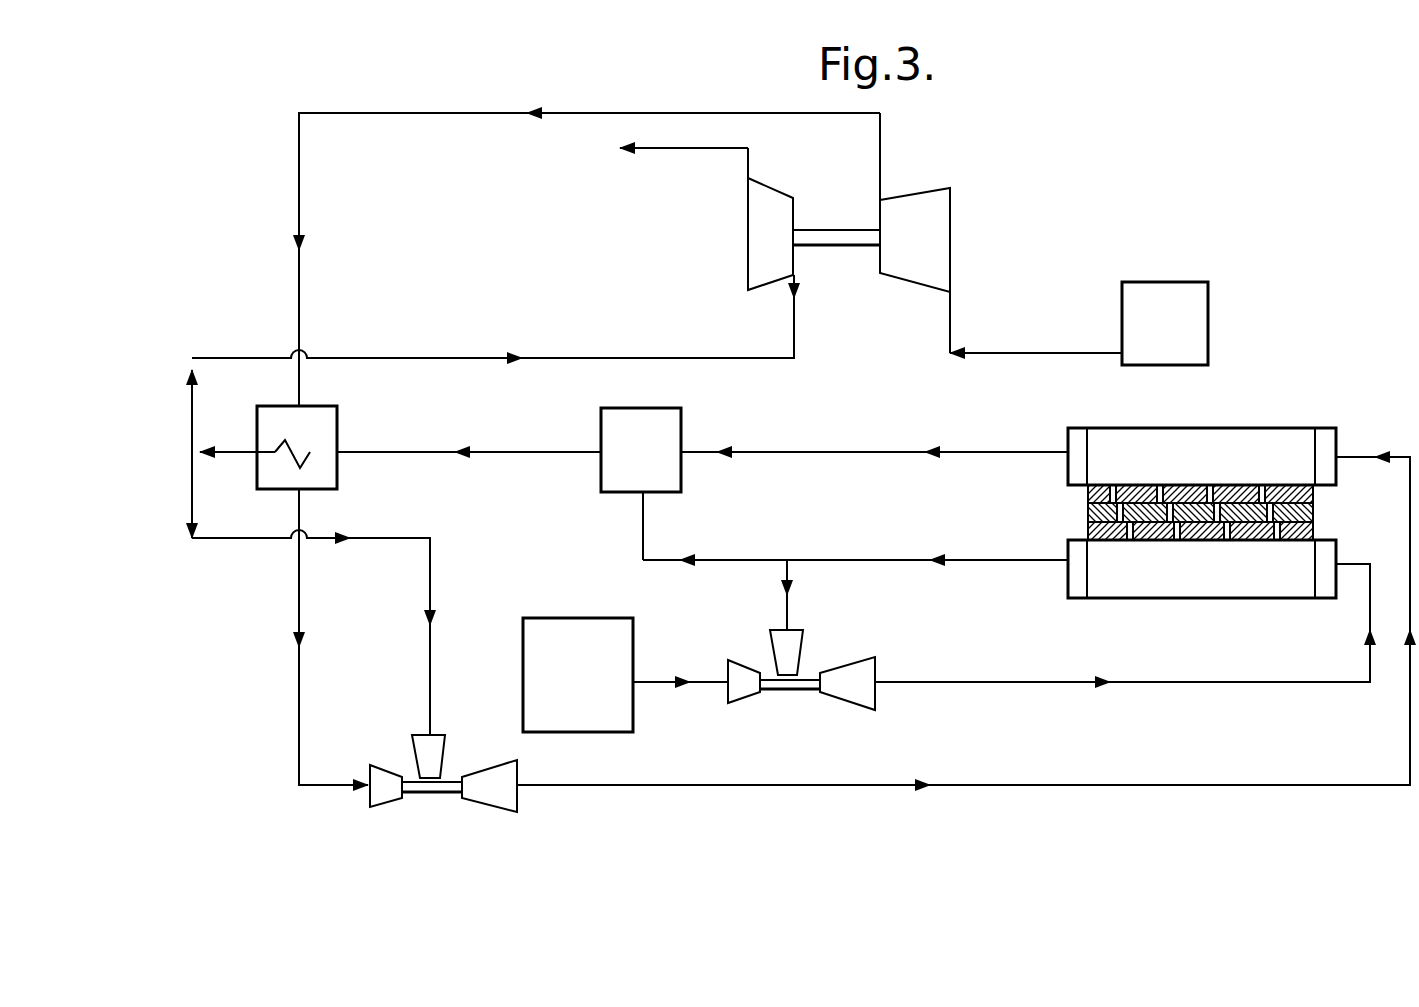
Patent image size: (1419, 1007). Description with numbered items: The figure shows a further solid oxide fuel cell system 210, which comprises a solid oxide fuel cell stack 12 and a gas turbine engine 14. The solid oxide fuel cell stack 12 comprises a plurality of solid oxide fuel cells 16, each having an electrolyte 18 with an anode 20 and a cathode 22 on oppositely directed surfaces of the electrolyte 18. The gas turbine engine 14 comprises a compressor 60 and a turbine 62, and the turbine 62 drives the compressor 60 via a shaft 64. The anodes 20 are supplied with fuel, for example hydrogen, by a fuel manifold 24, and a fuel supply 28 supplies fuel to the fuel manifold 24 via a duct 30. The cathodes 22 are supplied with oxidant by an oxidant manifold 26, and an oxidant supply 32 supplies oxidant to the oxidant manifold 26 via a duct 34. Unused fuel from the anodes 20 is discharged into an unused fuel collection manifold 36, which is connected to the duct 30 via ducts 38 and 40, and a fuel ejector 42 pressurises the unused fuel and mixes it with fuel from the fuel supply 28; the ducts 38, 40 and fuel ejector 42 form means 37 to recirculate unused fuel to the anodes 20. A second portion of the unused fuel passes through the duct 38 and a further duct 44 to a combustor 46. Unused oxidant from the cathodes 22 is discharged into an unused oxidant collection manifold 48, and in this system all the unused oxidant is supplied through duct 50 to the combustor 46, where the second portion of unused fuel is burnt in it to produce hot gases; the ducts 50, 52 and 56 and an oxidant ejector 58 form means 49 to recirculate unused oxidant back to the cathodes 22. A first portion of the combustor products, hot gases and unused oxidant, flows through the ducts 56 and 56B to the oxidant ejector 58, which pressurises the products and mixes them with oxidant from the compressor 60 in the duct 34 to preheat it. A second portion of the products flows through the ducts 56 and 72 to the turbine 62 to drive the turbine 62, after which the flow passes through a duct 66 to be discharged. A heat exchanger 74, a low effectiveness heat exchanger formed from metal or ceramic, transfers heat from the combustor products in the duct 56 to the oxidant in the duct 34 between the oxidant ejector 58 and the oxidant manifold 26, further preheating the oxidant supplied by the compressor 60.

The solid oxide fuel cell stack 12 is at (1193, 510).
The gas turbine engine 14 is at (868, 296).
The solid oxide fuel cells 16 is at (1280, 490).
The electrolyte 18 is at (1088, 512).
The anode 20 is at (1088, 532).
The cathode 22 is at (1088, 489).
The fuel manifold 24 is at (1325, 588).
The oxidant manifold 26 is at (1338, 432).
The fuel supply 28 is at (577, 612).
The duct 30 is at (675, 688).
The oxidant supply 32 is at (1195, 322).
The duct 34 is at (480, 118).
The unused fuel collection manifold 36 is at (1068, 576).
The means to recirculate unused fuel 37 is at (952, 627).
The duct 38 is at (910, 563).
The duct 40 is at (790, 598).
The fuel ejector 42 is at (788, 695).
The duct 44 is at (698, 558).
The combustor 46 is at (612, 408).
The unused oxidant collection manifold 48 is at (1068, 434).
The means to recirculate unused oxidant 49 is at (545, 420).
The duct 50 is at (900, 455).
The duct 52 is at (750, 455).
The duct 56 is at (410, 455).
The duct 56B is at (192, 488).
The oxidant ejector 58 is at (433, 795).
The compressor 60 is at (928, 188).
The turbine 62 is at (755, 283).
The shaft 64 is at (838, 236).
The duct 66 is at (690, 152).
The duct 72 is at (447, 357).
The heat exchanger 74 is at (337, 425).
The solid oxide fuel cell system 210 is at (1187, 256).